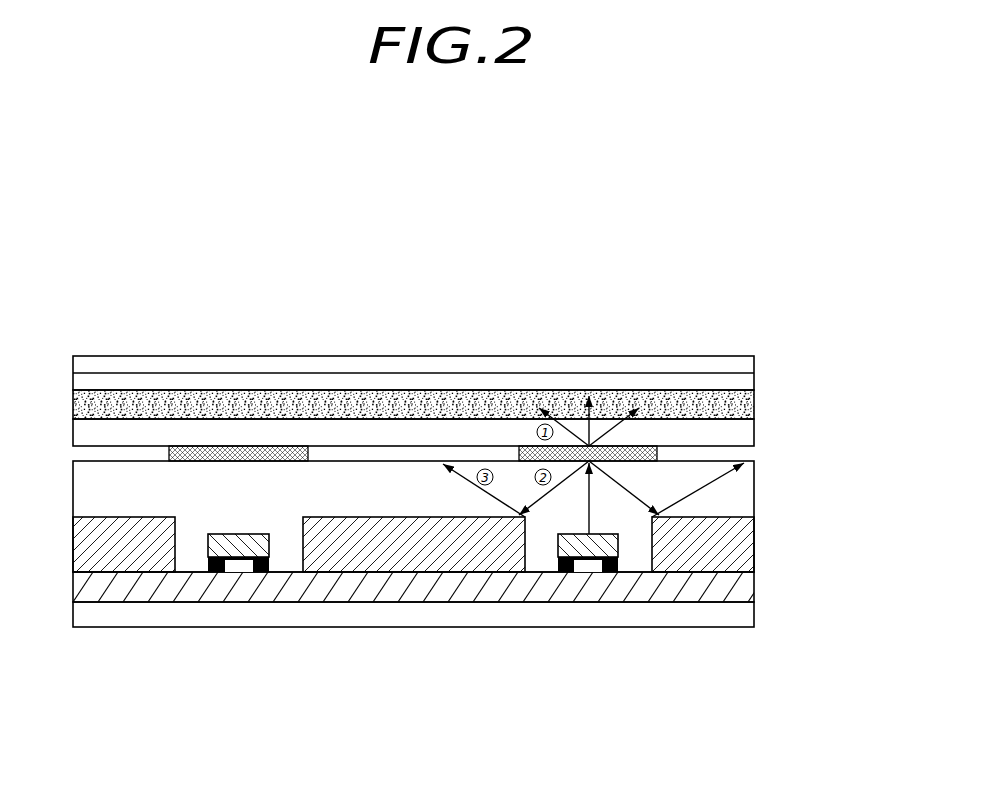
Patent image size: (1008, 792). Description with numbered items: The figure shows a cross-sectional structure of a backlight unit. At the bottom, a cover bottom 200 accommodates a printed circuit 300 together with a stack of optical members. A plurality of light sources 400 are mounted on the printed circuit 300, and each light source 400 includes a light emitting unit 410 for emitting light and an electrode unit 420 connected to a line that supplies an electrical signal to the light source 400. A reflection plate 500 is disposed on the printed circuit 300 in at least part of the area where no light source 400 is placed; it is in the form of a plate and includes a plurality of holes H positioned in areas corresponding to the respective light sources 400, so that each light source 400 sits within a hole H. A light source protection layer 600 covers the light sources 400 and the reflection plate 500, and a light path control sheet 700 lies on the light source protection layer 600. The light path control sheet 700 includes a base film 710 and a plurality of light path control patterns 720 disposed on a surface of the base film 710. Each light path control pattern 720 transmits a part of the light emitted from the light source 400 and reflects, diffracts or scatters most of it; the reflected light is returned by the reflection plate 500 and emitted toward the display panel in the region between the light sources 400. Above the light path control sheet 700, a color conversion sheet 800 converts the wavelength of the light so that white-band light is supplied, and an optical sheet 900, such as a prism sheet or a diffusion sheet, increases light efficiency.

The optical sheet 900 is at (762, 357).
The color conversion sheet 800 is at (754, 408).
The light path control sheet 700 is at (478, 443).
The base film 710 is at (748, 430).
The light path control pattern 720 is at (657, 450).
The light source protection layer 600 is at (748, 484).
The reflection plate 500 is at (748, 538).
The light source 400 is at (413, 625).
The light emitting unit 410 is at (558, 545).
The electrode unit 420 is at (612, 572).
The printed circuit 300 is at (748, 587).
The cover bottom 200 is at (748, 613).
The hole H is at (196, 548).